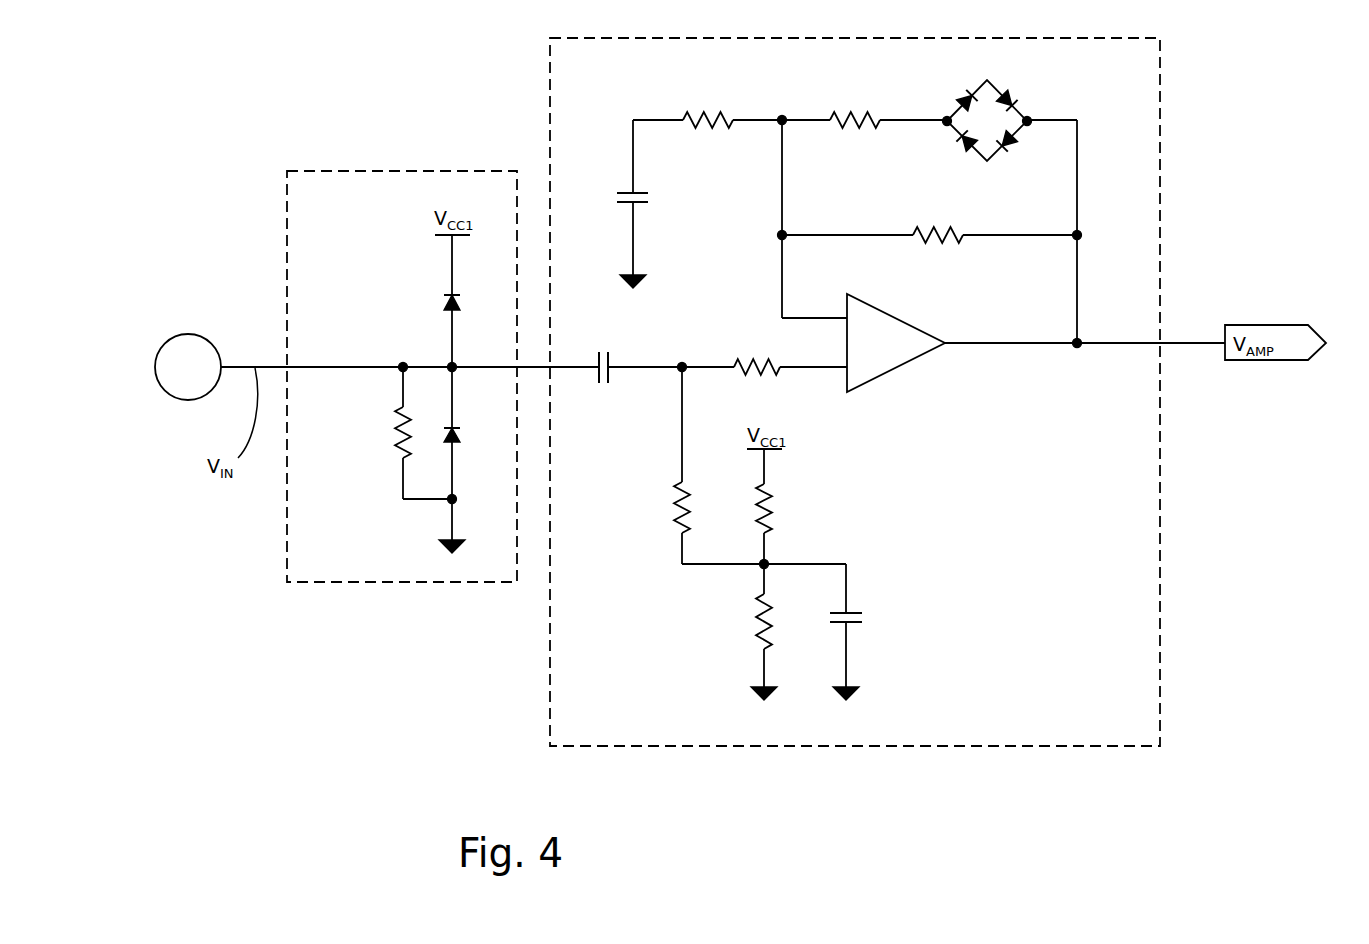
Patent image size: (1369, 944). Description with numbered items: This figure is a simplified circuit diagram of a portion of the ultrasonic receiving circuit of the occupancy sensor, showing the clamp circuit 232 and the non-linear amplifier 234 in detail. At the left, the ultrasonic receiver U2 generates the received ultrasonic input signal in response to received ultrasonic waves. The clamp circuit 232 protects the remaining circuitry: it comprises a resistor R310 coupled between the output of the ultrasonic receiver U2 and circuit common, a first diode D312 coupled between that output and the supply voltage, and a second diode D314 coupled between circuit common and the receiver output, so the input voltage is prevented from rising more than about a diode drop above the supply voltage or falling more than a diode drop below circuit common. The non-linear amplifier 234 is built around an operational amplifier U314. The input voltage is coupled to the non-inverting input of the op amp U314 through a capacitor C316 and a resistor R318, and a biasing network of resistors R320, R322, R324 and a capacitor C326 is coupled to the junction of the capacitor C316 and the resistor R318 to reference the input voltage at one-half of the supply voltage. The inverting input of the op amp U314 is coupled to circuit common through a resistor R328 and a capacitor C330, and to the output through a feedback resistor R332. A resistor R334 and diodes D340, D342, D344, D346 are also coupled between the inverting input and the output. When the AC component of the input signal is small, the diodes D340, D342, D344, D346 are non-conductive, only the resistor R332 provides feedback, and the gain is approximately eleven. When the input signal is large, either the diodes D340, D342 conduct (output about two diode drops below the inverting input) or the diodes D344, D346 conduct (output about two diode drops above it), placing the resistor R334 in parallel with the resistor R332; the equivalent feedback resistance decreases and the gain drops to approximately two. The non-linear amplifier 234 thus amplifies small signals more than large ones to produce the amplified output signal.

The ultrasonic receiver U2 is at (203, 379).
The clamp circuit 232 is at (450, 582).
The non-linear amplifier 234 is at (867, 745).
The resistor R310 is at (393, 425).
The first diode D312 is at (441, 306).
The second diode D314 is at (461, 432).
The capacitor C316 is at (611, 376).
The resistor R318 is at (773, 358).
The resistor R320 is at (672, 497).
The resistor R322 is at (756, 607).
The resistor R324 is at (778, 506).
The capacitor C326 is at (862, 614).
The operational amplifier U314 is at (893, 351).
The resistor R328 is at (698, 122).
The capacitor C330 is at (643, 200).
The resistor R332 is at (957, 238).
The resistor R334 is at (832, 125).
The diode D340 is at (963, 99).
The diode D342 is at (1025, 87).
The diode D344 is at (967, 146).
The diode D346 is at (1010, 142).